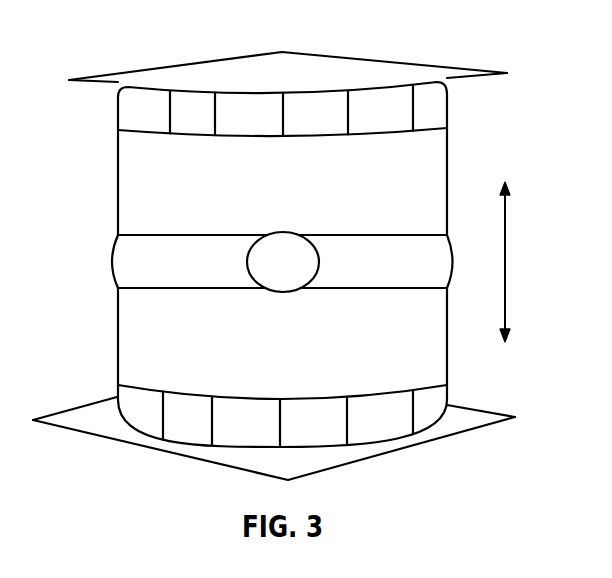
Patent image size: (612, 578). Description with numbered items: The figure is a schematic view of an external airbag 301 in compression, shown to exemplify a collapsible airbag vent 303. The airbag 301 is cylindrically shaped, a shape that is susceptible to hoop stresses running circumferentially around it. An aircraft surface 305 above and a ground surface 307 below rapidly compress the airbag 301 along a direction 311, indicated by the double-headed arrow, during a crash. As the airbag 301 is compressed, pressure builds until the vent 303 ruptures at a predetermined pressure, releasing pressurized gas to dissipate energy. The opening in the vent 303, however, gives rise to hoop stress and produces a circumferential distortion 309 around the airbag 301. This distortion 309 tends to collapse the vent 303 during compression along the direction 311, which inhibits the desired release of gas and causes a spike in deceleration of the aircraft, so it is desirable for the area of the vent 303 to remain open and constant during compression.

The airbag 301 is at (478, 158).
The collapsible airbag vent 303 is at (247, 270).
The aircraft surface 305 is at (467, 70).
The ground surface 307 is at (498, 412).
The circumferential distortion 309 is at (150, 235).
The direction 311 is at (505, 265).